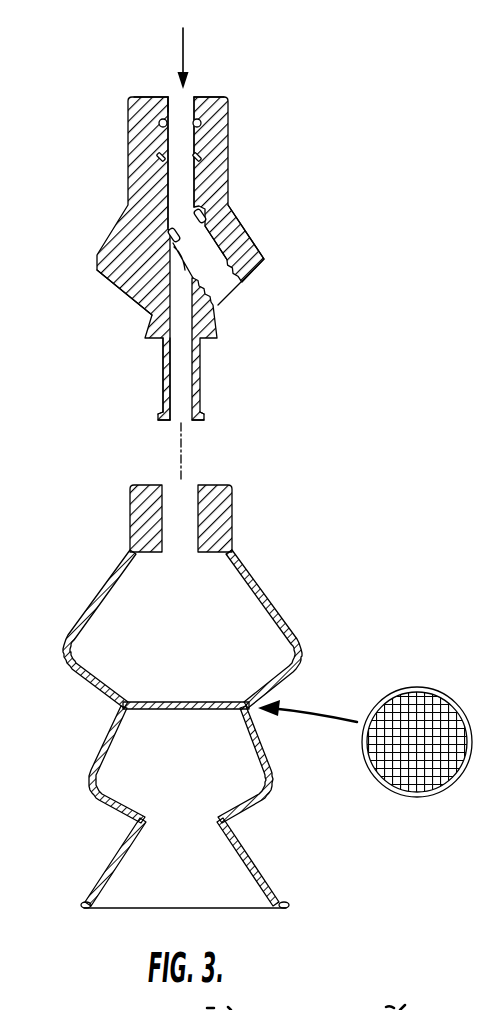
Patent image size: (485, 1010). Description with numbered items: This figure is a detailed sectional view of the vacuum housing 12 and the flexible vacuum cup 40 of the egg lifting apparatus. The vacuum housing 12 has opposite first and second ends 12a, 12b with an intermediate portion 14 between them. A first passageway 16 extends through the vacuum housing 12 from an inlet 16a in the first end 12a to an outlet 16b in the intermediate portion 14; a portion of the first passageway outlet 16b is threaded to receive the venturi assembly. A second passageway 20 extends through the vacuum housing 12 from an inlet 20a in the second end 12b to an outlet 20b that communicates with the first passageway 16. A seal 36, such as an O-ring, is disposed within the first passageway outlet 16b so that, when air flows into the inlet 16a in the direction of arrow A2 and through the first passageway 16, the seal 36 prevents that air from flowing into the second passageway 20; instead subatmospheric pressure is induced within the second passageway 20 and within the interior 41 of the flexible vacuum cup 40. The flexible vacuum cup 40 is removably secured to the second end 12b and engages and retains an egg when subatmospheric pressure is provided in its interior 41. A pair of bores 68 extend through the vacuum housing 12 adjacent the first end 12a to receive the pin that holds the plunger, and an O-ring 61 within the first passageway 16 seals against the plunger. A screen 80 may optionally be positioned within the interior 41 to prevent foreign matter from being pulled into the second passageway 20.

The arrow A2 is at (186, 46).
The vacuum housing 12 is at (229, 175).
The vacuum housing first end 12a is at (209, 96).
The vacuum housing second end 12b is at (192, 424).
The intermediate portion 14 is at (261, 252).
The first passageway 16 is at (188, 188).
The first passageway inlet 16a is at (168, 96).
The first passageway outlet 16b is at (253, 280).
The second passageway 20 is at (180, 315).
The second passageway inlet 20a is at (170, 424).
The second passageway outlet 20b is at (140, 298).
The seal 36 is at (206, 223).
The flexible vacuum cup 40 is at (197, 719).
The interior 41 is at (150, 880).
The O-ring 61 is at (197, 156).
The bores 68 is at (159, 124).
The screen 80 is at (409, 688).